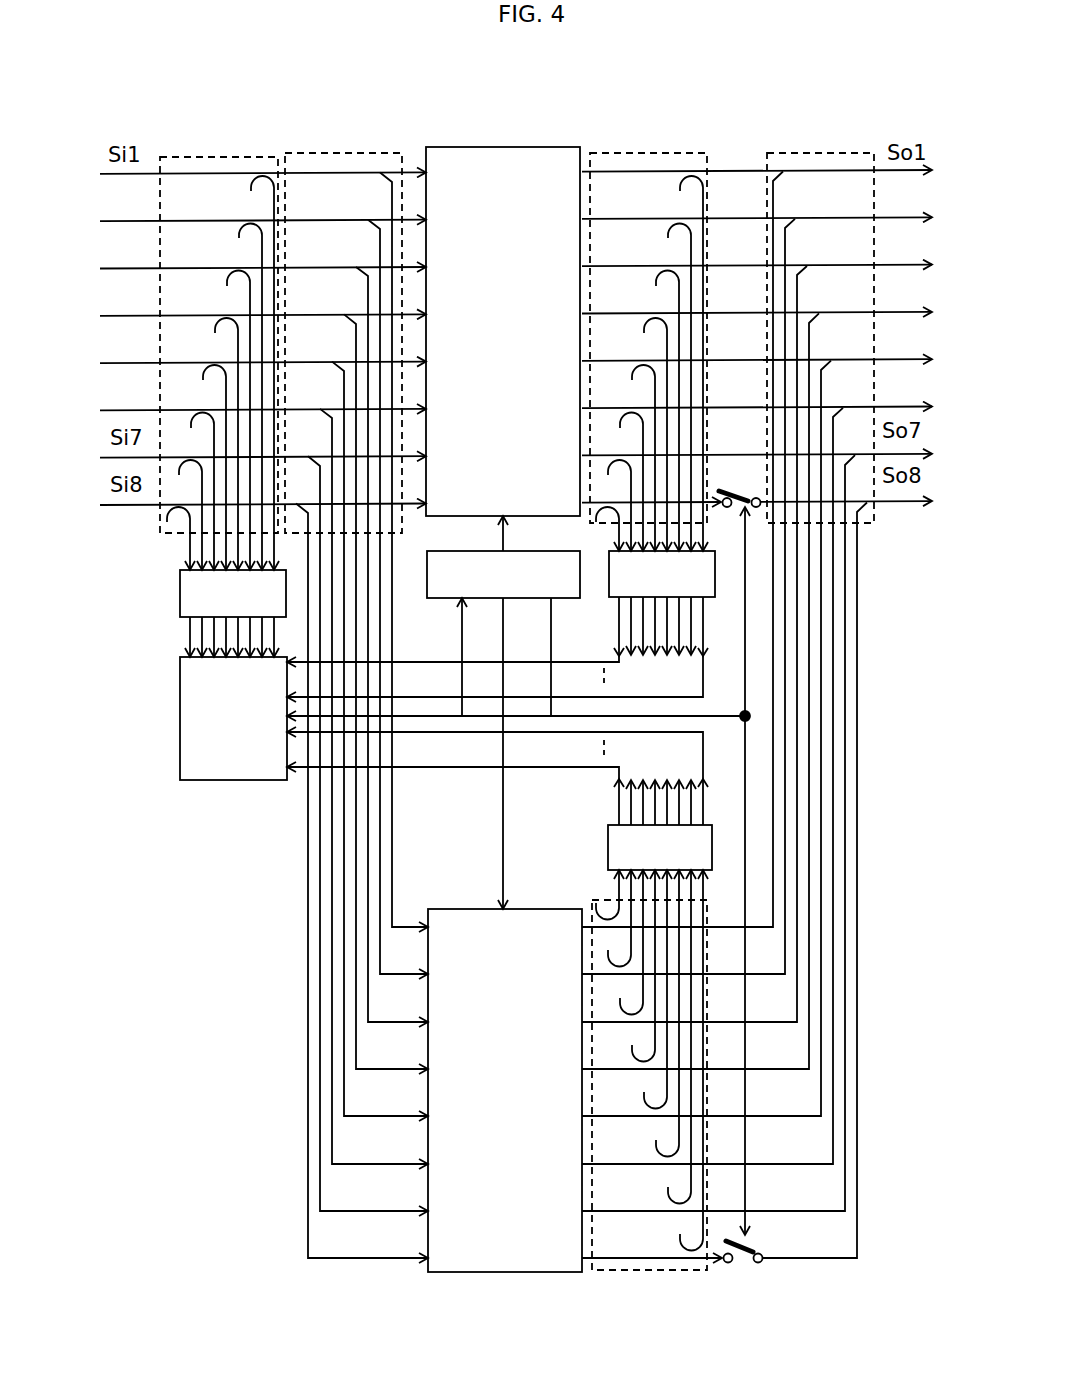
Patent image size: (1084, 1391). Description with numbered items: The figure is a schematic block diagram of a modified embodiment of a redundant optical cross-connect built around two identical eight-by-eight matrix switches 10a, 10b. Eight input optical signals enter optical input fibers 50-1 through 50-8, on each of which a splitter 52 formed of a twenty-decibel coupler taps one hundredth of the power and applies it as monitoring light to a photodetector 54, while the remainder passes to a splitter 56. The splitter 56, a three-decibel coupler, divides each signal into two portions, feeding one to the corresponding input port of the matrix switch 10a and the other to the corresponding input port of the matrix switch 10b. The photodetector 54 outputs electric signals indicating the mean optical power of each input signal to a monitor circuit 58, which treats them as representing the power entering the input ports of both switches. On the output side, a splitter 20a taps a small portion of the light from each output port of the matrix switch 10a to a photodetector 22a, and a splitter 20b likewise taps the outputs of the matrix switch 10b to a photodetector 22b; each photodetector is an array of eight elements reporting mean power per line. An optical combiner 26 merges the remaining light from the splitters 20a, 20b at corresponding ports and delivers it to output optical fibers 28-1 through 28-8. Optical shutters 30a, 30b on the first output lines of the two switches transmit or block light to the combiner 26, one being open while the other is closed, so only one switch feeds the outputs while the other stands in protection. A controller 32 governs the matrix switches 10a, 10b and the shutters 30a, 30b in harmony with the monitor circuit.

The matrix switch 10a is at (503, 160).
The matrix switch 10b is at (532, 922).
The splitter 52 is at (230, 160).
The splitter 56 is at (338, 160).
The photodetector 54 is at (192, 590).
The monitor circuit 58 is at (235, 781).
The controller 32 is at (527, 599).
The splitter 20a is at (655, 160).
The splitter 20b is at (653, 1266).
The photodetector 22a is at (617, 585).
The photodetector 22b is at (617, 850).
The optical combiner 26 is at (820, 158).
The optical shutter 30a is at (737, 497).
The optical shutter 30b is at (742, 1263).
The optical input fiber 50-1 is at (130, 176).
The optical input fiber 50-8 is at (130, 507).
The output optical fiber 28-1 is at (902, 174).
The output optical fiber 28-8 is at (903, 506).